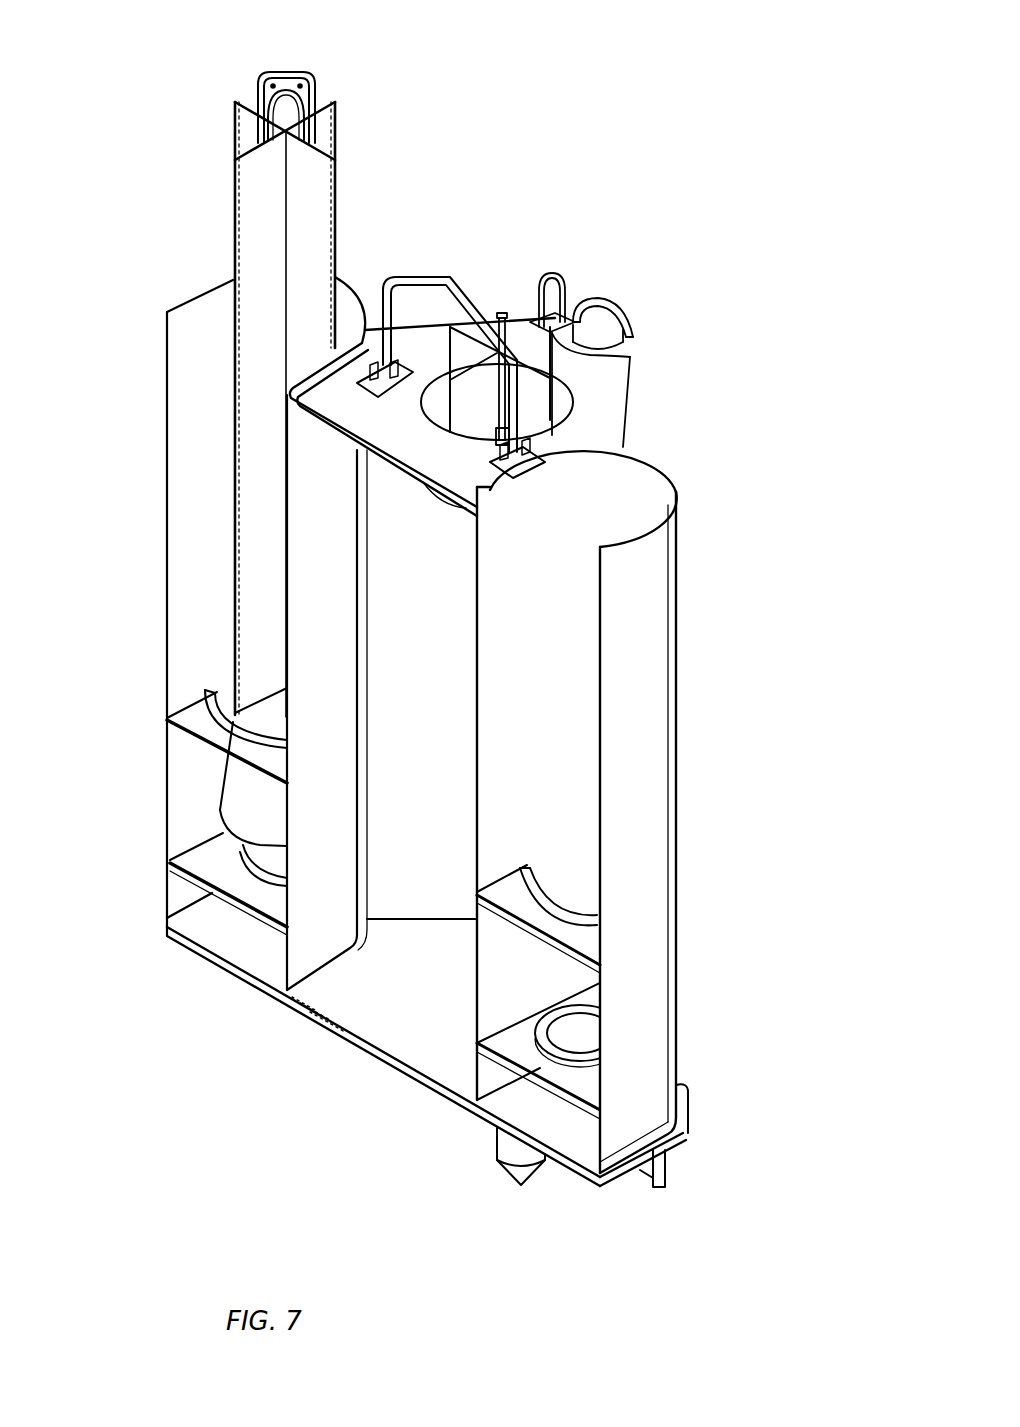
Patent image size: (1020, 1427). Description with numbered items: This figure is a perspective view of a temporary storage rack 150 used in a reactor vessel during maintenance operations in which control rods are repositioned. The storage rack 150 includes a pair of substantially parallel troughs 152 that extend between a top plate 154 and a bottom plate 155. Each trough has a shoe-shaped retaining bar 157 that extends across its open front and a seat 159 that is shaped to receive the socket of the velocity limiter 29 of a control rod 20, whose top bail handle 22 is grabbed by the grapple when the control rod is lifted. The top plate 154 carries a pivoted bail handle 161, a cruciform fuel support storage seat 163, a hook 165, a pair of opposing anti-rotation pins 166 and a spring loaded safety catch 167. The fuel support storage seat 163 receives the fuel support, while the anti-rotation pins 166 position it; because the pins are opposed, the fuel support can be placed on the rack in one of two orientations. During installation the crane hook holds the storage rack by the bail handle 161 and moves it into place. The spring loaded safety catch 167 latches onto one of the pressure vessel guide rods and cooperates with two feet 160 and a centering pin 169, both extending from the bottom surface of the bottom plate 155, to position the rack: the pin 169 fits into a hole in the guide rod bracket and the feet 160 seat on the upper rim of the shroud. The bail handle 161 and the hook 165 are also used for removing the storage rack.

The storage rack 150 is at (146, 240).
The control rod 20 is at (323, 190).
The top bail handle 22 is at (310, 75).
The pivoted bail handle 161 is at (417, 273).
The anti-rotation pins 166 is at (502, 312).
The hook 165 is at (563, 277).
The spring loaded safety catch 167 is at (630, 320).
The cruciform fuel support storage seat 163 is at (552, 392).
The top plate 154 is at (612, 428).
The troughs 152 is at (652, 637).
The shoe-shaped retaining bar 157 is at (203, 742).
The velocity limiter 29 is at (253, 792).
The seat 159 is at (587, 1022).
The bottom plate 155 is at (380, 1032).
The centering pin 169 is at (500, 1148).
The feet 160 is at (663, 1163).